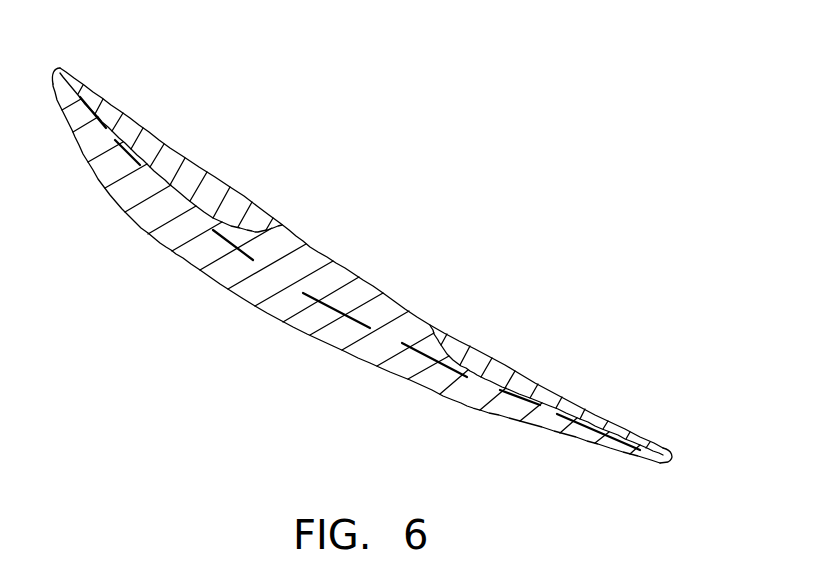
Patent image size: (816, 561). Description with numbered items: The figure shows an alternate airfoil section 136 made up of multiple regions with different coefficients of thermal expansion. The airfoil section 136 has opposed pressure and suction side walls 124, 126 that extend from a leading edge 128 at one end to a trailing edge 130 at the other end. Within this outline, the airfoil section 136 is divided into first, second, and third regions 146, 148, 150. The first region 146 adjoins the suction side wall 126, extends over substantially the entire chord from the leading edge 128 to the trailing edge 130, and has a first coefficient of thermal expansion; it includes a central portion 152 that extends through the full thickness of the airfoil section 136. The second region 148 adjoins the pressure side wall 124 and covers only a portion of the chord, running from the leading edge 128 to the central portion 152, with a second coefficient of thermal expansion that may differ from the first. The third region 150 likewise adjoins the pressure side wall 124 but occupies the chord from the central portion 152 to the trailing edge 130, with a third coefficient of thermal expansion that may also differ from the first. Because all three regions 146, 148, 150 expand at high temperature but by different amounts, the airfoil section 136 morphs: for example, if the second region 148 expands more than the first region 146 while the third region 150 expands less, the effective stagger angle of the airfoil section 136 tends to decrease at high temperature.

The pressure side wall 124 is at (343, 266).
The suction side wall 126 is at (262, 310).
The leading edge 128 is at (60, 70).
The trailing edge 130 is at (672, 458).
The airfoil section 136 is at (391, 252).
The first region 146 is at (421, 397).
The second region 148 is at (173, 160).
The third region 150 is at (504, 377).
The central portion 152 is at (297, 250).